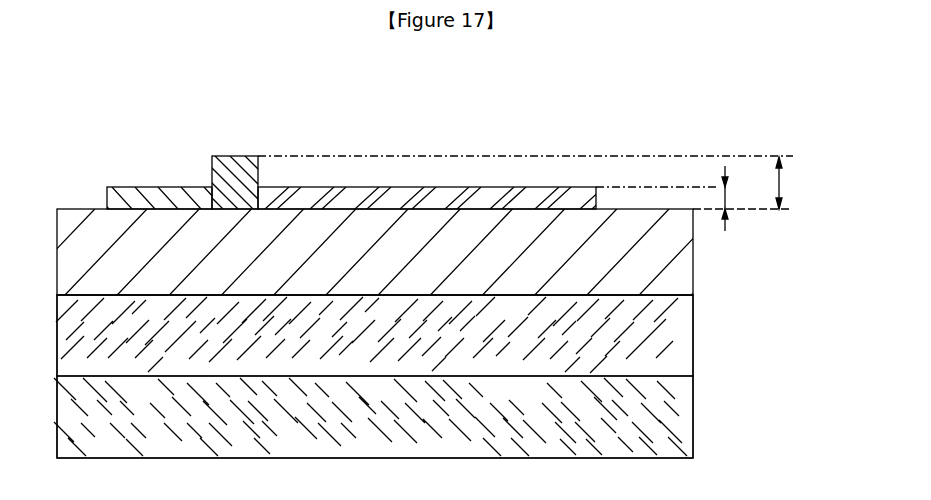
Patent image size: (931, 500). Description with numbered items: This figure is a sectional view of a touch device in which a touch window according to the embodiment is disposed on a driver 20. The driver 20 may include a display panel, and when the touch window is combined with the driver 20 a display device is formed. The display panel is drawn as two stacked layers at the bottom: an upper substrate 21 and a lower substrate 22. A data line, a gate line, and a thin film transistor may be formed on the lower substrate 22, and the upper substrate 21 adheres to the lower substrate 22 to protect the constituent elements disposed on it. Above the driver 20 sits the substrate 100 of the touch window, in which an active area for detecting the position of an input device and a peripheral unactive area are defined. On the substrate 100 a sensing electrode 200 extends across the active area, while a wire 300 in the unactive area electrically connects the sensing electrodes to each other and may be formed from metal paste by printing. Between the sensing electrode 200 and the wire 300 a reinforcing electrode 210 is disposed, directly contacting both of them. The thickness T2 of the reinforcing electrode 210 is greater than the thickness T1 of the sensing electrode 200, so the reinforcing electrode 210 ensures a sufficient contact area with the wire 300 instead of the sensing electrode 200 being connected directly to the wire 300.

The driver 20 is at (782, 313).
The upper substrate 21 is at (693, 328).
The lower substrate 22 is at (693, 412).
The substrate 100 is at (693, 250).
The sensing electrode 200 is at (402, 187).
The reinforcing electrode 210 is at (240, 162).
The wire 300 is at (140, 194).
The thickness of the sensing electrode T1 is at (742, 198).
The thickness of the reinforcing electrode T2 is at (794, 183).